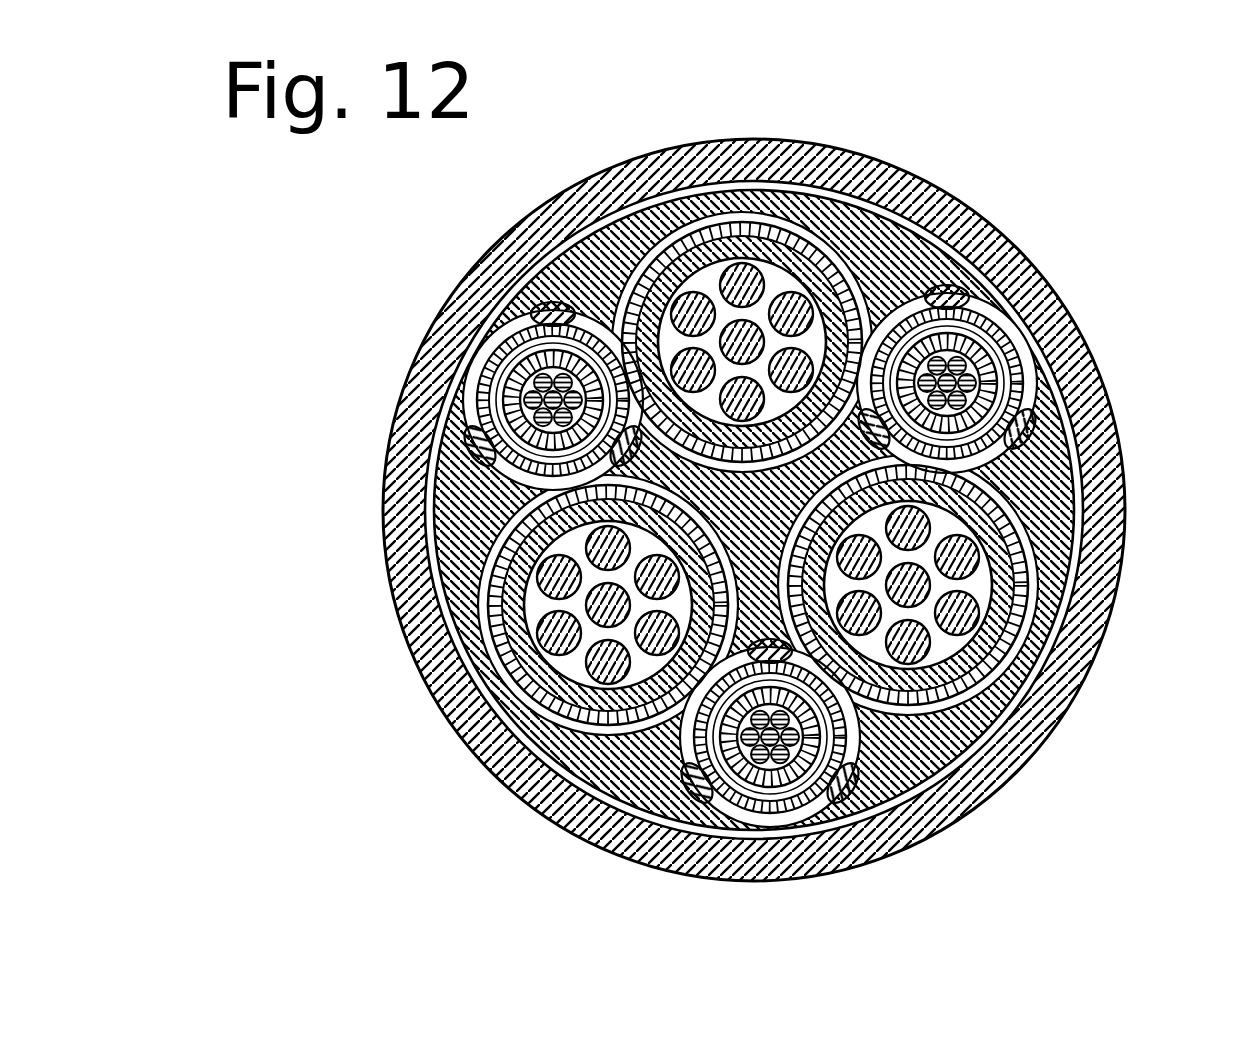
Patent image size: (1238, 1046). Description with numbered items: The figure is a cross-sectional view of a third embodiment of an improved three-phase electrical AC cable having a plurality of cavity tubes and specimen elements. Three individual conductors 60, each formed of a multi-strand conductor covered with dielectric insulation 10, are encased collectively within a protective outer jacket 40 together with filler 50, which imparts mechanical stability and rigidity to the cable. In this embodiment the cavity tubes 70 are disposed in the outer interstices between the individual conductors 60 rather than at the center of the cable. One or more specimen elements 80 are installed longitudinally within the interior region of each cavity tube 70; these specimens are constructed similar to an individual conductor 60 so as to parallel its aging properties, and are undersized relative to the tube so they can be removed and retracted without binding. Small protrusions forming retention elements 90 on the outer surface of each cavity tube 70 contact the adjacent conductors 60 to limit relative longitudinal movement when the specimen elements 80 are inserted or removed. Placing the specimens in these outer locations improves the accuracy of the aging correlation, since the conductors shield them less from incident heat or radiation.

The dielectric insulation 10 is at (993, 540).
The outer jacket 40 is at (468, 748).
The filler 50 is at (745, 512).
The individual conductors 60 is at (838, 256).
The cavity tube 70 is at (740, 810).
The specimen elements 80 is at (507, 388).
The retention elements 90 is at (547, 320).